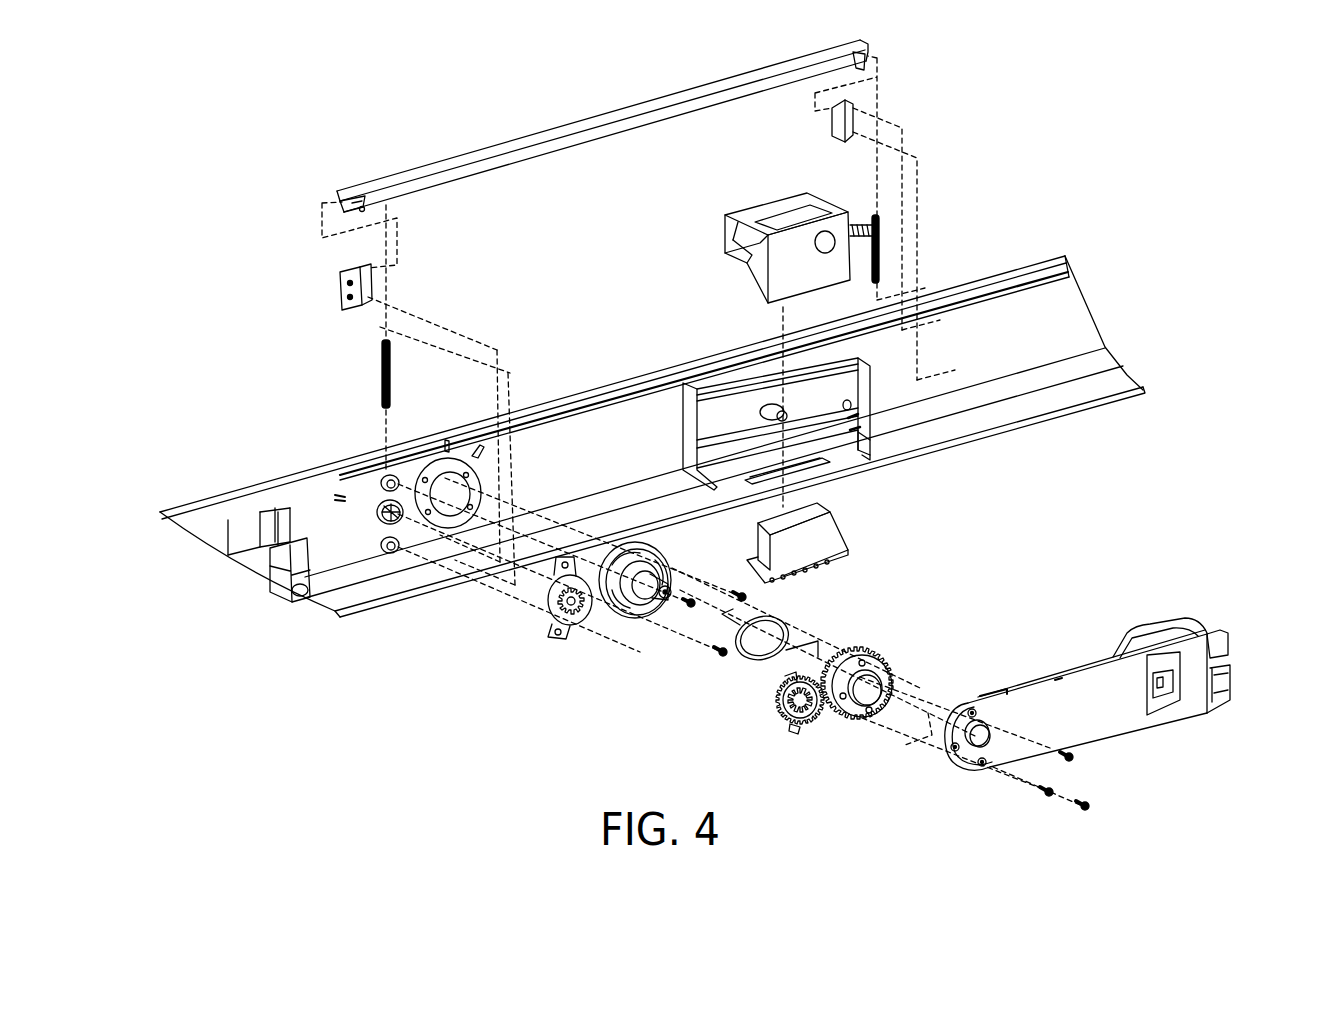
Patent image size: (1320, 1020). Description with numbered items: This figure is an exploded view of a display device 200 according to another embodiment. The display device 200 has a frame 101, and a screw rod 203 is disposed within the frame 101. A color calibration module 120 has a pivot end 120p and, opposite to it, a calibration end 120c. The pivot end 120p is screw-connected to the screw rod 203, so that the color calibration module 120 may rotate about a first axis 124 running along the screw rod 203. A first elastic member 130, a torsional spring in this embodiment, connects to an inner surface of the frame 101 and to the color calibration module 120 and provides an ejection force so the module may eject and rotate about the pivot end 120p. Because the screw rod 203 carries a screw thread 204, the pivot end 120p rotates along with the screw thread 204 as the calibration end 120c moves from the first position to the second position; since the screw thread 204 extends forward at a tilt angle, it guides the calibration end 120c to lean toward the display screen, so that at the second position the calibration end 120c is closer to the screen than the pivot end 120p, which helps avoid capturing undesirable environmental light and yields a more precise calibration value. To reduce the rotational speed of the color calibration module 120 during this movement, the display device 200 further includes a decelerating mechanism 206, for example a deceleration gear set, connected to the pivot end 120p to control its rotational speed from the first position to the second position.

The display device 200 is at (283, 78).
The frame 101 is at (1012, 430).
The screw rod 203 is at (671, 544).
The screw thread 204 is at (632, 604).
The decelerating mechanism 206 is at (846, 722).
The first elastic member 130 is at (804, 630).
The first axis 124 is at (928, 713).
The color calibration module 120 is at (1122, 746).
The pivot end 120p is at (967, 772).
The calibration end 120c is at (1170, 713).